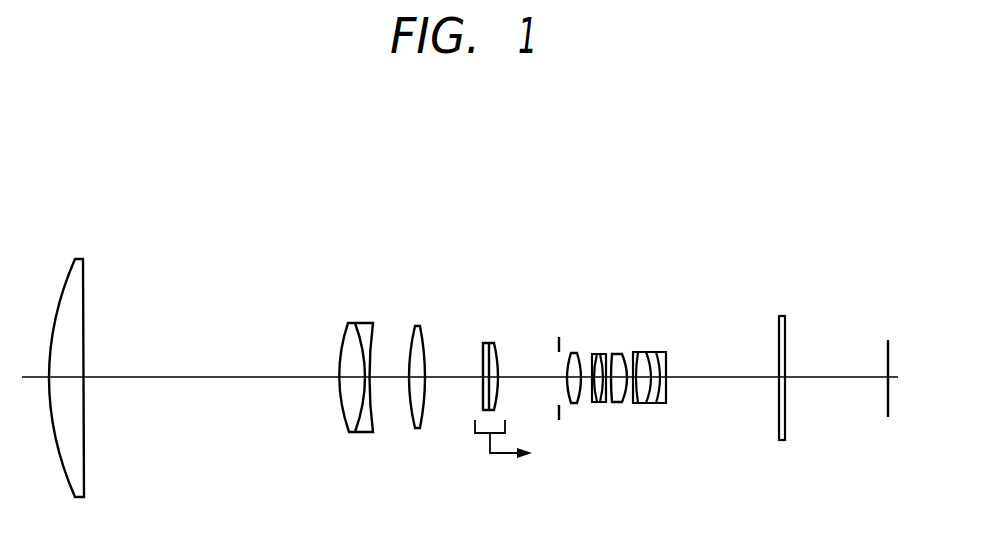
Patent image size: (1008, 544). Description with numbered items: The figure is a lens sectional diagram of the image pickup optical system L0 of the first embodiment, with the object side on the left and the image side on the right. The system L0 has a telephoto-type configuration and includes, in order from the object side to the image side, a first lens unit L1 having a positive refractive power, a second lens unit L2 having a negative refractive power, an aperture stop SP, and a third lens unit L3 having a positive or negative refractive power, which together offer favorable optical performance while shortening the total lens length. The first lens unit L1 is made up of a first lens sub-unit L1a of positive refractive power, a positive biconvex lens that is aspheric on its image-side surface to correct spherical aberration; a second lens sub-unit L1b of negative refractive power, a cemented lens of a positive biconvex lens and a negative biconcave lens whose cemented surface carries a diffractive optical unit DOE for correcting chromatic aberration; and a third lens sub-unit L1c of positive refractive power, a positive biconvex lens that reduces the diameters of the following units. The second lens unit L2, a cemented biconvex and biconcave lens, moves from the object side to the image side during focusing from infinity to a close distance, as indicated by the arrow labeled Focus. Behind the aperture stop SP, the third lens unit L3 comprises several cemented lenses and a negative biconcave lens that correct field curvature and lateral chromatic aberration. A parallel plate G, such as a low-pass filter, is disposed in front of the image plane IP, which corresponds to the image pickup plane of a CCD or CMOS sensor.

The image pickup optical system L0 is at (673, 135).
The first lens unit L1 is at (429, 189).
The first lens sub-unit L1a is at (91, 245).
The second lens sub-unit L1b is at (380, 270).
The third lens sub-unit L1c is at (427, 270).
The second lens unit L2 is at (506, 190).
The third lens unit L3 is at (673, 190).
The diffractive optical unit DOE is at (348, 336).
The aperture stop SP is at (558, 337).
The focusing movement arrow Focus is at (506, 454).
The parallel plate G is at (778, 326).
The image plane IP is at (888, 340).